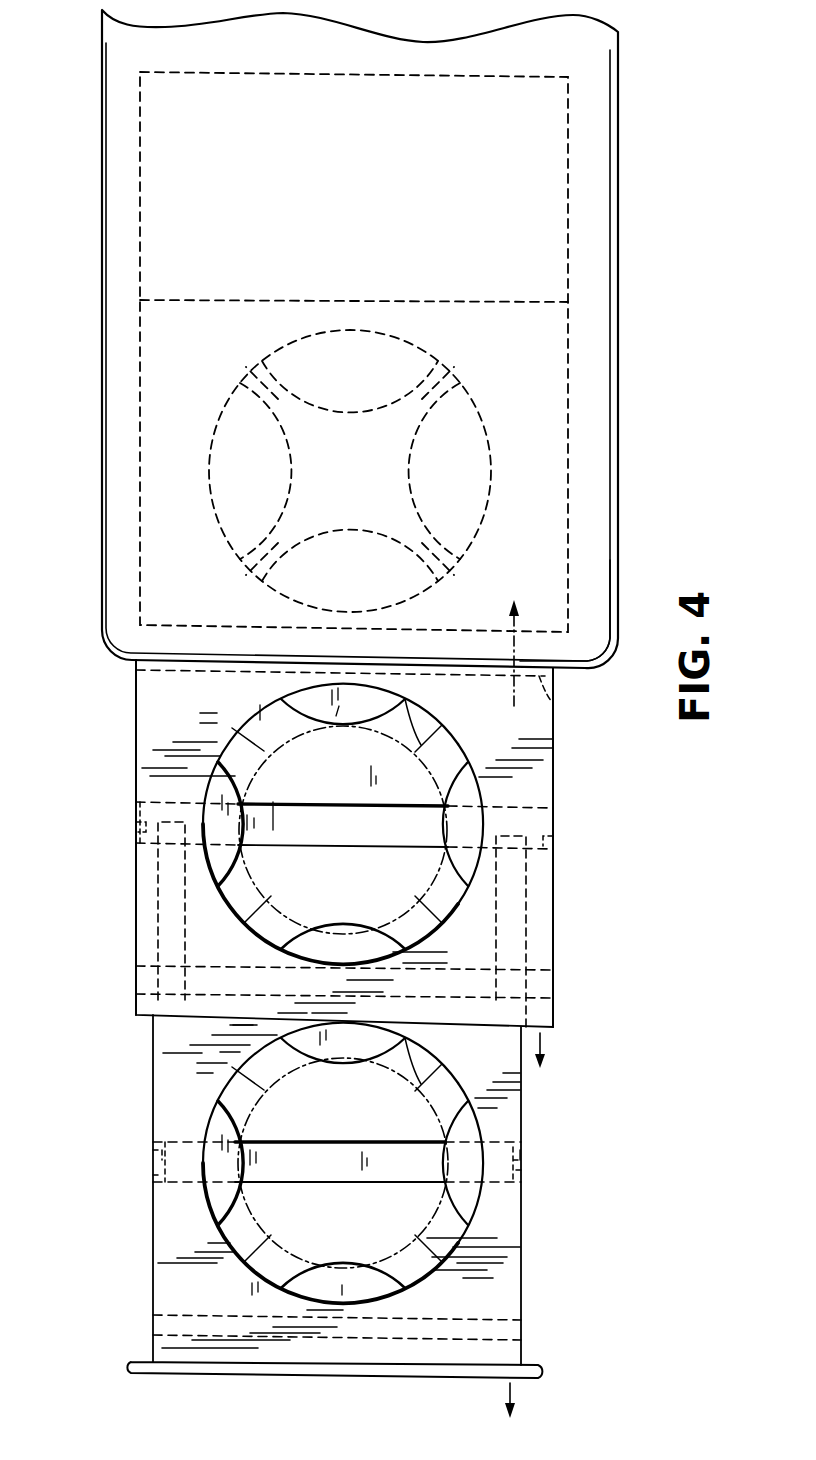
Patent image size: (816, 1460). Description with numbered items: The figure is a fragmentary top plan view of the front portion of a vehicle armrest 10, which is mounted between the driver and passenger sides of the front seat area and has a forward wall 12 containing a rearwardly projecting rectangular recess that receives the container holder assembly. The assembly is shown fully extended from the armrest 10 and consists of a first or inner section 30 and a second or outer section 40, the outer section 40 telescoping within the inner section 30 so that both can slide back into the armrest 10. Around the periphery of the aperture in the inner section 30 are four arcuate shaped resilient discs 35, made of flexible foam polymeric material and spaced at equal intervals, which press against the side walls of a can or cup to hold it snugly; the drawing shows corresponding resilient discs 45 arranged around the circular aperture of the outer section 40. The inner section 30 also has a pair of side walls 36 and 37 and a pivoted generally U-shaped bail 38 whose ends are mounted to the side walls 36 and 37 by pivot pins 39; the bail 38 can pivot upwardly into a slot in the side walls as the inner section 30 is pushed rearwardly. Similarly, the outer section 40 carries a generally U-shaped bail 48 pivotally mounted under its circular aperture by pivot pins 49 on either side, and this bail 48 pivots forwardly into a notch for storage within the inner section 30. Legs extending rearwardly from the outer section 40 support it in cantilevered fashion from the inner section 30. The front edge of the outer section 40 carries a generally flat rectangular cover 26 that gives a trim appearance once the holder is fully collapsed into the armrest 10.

The vehicle armrest 10 is at (72, 490).
The forward wall 12 is at (626, 652).
The cover 26 is at (567, 1394).
The first or inner section 30 is at (103, 768).
The arcuate shaped resilient discs 35 is at (305, 939).
The side wall 36 is at (112, 908).
The side wall 37 is at (553, 932).
The bail 38 is at (321, 811).
The pivot pins 39 is at (577, 829).
The second or outer section 40 is at (101, 1103).
The second valve ball 45 is at (307, 1274).
The bail 48 is at (327, 1153).
The pivot pins 49 is at (548, 1159).